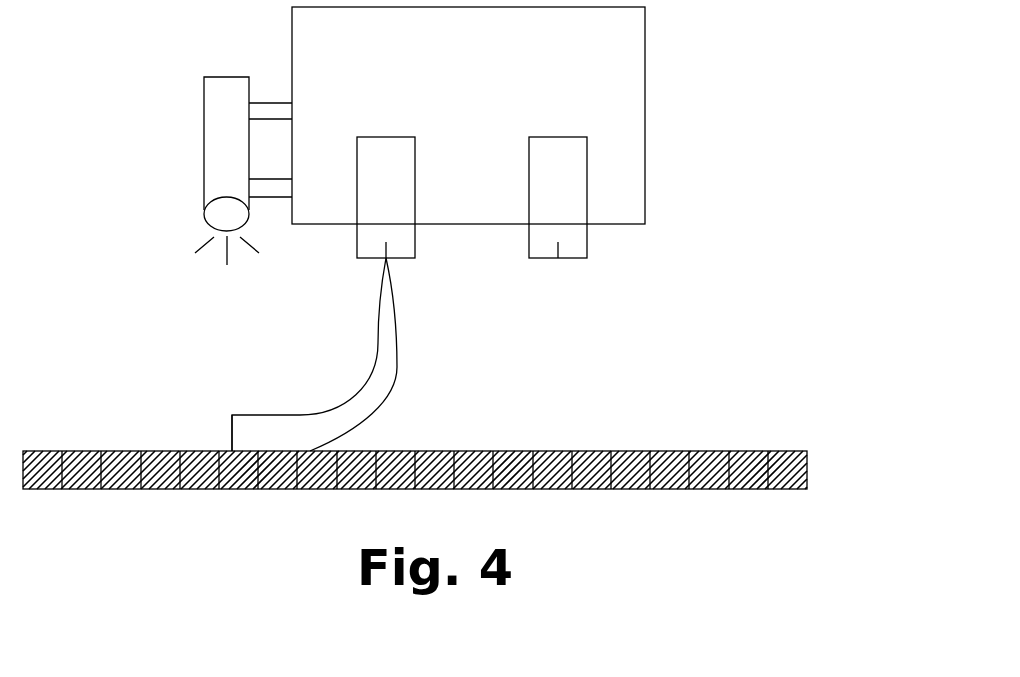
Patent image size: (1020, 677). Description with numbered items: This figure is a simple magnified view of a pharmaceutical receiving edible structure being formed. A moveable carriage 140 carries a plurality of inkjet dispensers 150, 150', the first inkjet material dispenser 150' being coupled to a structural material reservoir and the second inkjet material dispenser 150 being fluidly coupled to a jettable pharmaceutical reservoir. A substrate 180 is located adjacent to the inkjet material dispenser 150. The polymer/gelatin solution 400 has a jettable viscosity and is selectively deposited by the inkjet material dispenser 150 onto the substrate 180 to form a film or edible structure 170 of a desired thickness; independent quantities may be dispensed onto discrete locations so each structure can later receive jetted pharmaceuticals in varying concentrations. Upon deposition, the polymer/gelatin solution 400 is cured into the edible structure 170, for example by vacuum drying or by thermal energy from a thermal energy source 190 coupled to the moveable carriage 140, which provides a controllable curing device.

The moveable carriage 140 is at (487, 58).
The inkjet material dispenser 150 is at (667, 142).
The first inkjet material dispenser 150' is at (307, 131).
The edible structure 170 is at (230, 415).
The substrate 180 is at (633, 521).
The thermal energy source 190 is at (204, 144).
The polymer/gelatin solution 400 is at (397, 367).